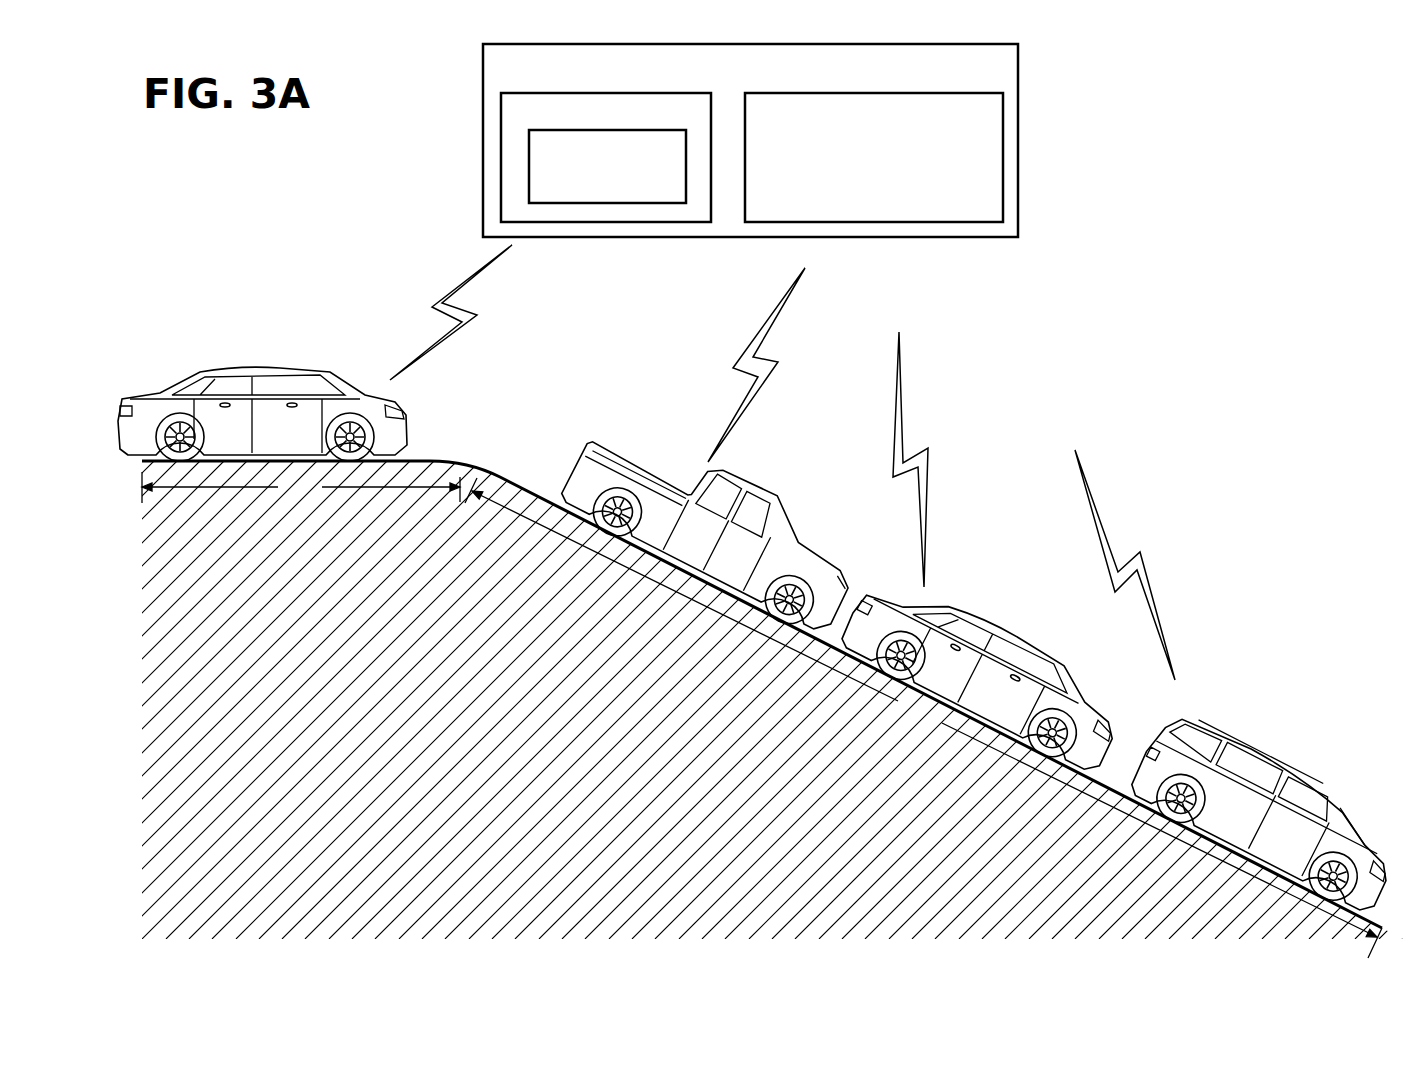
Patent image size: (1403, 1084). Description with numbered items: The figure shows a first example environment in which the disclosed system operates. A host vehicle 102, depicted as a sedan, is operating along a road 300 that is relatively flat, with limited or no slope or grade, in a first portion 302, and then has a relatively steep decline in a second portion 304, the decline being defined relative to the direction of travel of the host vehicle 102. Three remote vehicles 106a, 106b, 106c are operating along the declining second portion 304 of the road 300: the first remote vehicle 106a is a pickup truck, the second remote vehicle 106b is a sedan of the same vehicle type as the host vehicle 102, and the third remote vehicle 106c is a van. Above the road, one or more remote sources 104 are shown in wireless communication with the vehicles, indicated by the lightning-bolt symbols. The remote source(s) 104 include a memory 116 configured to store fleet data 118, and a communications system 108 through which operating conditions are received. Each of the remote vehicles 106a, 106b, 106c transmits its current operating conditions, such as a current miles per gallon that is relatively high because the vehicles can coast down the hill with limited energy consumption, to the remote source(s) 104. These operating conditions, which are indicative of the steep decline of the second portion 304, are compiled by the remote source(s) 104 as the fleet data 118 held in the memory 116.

The host vehicle 102 is at (257, 367).
The remote source(s) 104 is at (1018, 104).
The first remote vehicle 106a is at (673, 453).
The second remote vehicle 106b is at (993, 618).
The third remote vehicle 106c is at (1293, 768).
The communications system 108 is at (1003, 148).
The memory 116 is at (501, 138).
The fleet data 118 is at (529, 168).
The road 300 is at (420, 460).
The first portion 302 is at (301, 487).
The second portion 304 is at (923, 718).